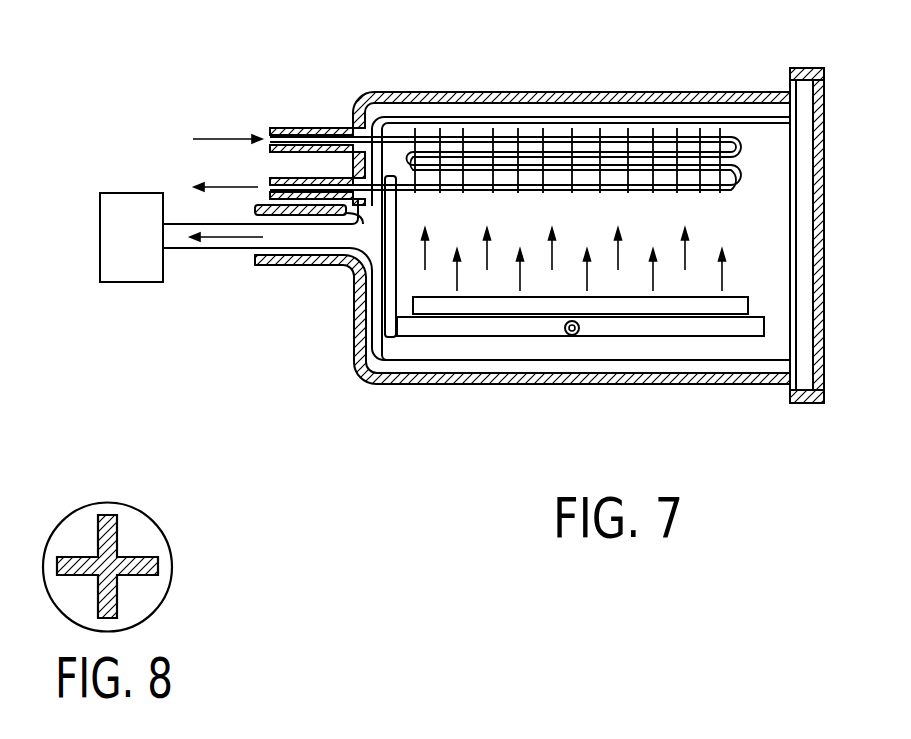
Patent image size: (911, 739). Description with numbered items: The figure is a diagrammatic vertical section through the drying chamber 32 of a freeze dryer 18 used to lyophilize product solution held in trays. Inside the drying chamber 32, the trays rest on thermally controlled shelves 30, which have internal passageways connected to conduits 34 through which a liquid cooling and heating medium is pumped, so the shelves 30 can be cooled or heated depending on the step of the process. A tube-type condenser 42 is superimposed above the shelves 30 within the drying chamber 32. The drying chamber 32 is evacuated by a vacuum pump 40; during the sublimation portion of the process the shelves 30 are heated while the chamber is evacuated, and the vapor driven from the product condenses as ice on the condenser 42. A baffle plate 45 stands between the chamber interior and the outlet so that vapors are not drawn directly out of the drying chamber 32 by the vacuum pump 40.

The freeze dryer 18 is at (673, 75).
The tube-type condenser 42 is at (477, 143).
The drying chamber 32 is at (767, 175).
The baffle plate 45 is at (383, 293).
The vacuum pump 40 is at (133, 283).
The thermally controlled shelves 30 is at (642, 335).
The conduits 34 is at (571, 337).